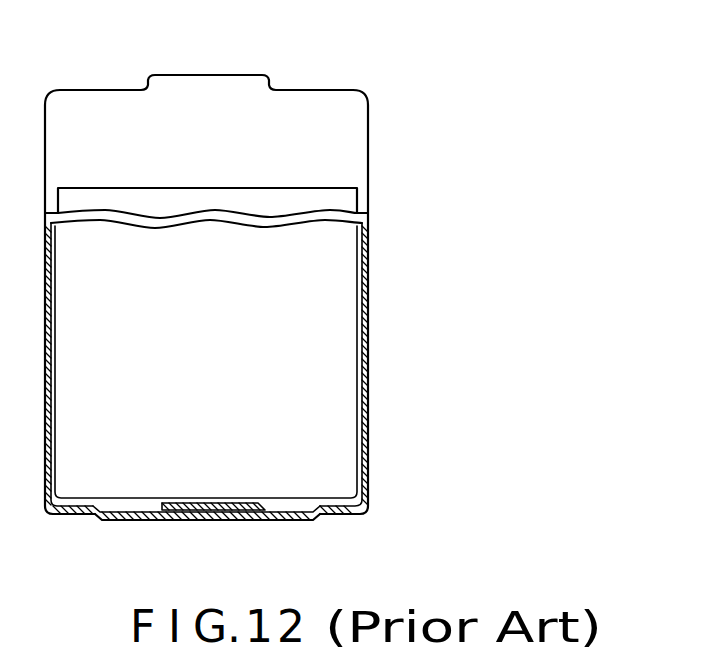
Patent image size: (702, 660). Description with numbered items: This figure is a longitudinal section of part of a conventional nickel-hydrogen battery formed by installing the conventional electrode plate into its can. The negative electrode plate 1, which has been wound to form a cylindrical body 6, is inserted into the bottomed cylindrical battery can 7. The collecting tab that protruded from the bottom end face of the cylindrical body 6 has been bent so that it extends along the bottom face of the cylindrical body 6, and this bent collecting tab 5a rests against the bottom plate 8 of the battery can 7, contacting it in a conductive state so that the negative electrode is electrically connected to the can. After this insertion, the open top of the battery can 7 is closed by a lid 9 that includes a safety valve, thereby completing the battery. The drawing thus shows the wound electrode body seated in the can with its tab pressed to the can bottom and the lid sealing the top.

The lid 9 is at (289, 90).
The negative electrode plate 1 is at (336, 185).
The battery can 7 is at (367, 302).
The cylindrical body 6 is at (342, 367).
The bent collecting tab 5a is at (183, 510).
The bottom plate 8 is at (267, 519).